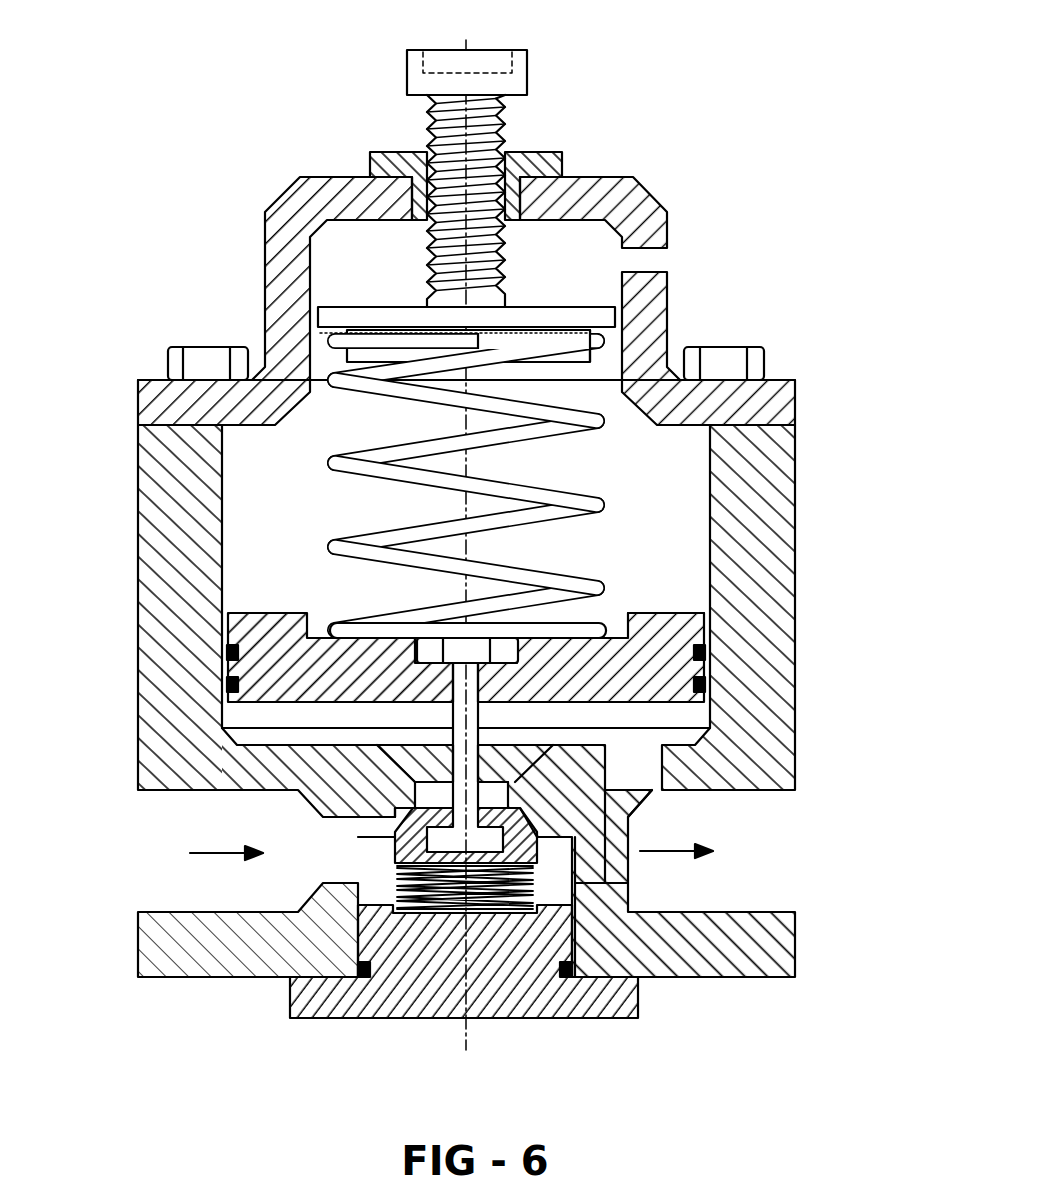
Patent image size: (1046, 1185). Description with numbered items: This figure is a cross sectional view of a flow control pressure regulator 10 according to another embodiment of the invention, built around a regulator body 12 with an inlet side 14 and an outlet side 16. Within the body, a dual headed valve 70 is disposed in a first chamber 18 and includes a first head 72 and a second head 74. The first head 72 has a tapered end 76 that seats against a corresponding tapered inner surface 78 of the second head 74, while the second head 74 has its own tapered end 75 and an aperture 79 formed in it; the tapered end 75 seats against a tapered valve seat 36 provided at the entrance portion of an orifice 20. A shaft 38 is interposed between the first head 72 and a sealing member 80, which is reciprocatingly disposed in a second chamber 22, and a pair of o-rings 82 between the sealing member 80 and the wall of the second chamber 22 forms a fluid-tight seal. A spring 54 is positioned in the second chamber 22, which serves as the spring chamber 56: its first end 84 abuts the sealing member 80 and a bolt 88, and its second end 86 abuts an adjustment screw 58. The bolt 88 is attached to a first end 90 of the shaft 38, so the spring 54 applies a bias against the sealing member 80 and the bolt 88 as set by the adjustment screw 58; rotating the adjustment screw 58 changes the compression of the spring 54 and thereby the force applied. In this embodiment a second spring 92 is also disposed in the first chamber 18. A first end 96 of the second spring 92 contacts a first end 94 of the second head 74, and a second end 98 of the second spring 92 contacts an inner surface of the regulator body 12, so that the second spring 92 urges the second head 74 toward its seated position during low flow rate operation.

The flow control pressure regulator 10 is at (649, 181).
The regulator body 12 is at (300, 203).
The inlet port 14 is at (175, 812).
The outlet port 16 is at (758, 835).
The first chamber 18 is at (305, 977).
The orifice 20 is at (447, 806).
The second chamber 22 is at (260, 712).
The tapered valve seat 36 is at (443, 793).
The shaft 38 is at (484, 745).
The spring 54 is at (358, 447).
The spring chamber 56 is at (260, 443).
The adjustment screw 58 is at (510, 52).
The dual headed valve 70 is at (420, 907).
The first head 72 is at (423, 822).
The second head 74 is at (540, 838).
The tapered end 75 is at (410, 817).
The tapered end 76 is at (503, 800).
The tapered inner surface 78 is at (405, 833).
The aperture 79 is at (370, 817).
The sealing member 80 is at (268, 627).
The o-rings 82 is at (228, 648).
The first end of the spring 84 is at (572, 640).
The second end of the spring 86 is at (550, 307).
The bolt 88 is at (487, 632).
The first end of the shaft 90 is at (480, 655).
The second spring 92 is at (427, 913).
The first end of the second head 94 is at (540, 868).
The first end of the second spring 96 is at (462, 915).
The second end of the second spring 98 is at (418, 918).